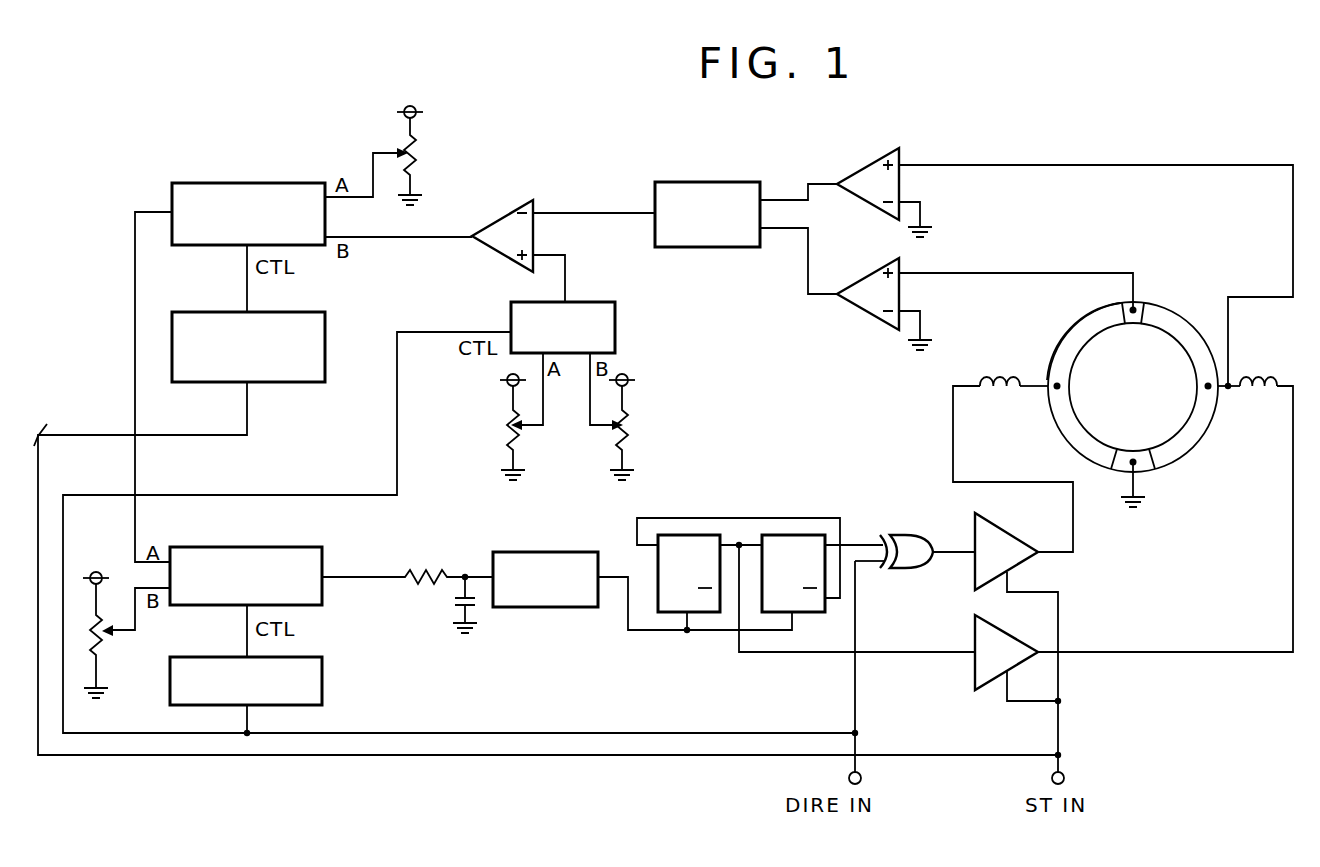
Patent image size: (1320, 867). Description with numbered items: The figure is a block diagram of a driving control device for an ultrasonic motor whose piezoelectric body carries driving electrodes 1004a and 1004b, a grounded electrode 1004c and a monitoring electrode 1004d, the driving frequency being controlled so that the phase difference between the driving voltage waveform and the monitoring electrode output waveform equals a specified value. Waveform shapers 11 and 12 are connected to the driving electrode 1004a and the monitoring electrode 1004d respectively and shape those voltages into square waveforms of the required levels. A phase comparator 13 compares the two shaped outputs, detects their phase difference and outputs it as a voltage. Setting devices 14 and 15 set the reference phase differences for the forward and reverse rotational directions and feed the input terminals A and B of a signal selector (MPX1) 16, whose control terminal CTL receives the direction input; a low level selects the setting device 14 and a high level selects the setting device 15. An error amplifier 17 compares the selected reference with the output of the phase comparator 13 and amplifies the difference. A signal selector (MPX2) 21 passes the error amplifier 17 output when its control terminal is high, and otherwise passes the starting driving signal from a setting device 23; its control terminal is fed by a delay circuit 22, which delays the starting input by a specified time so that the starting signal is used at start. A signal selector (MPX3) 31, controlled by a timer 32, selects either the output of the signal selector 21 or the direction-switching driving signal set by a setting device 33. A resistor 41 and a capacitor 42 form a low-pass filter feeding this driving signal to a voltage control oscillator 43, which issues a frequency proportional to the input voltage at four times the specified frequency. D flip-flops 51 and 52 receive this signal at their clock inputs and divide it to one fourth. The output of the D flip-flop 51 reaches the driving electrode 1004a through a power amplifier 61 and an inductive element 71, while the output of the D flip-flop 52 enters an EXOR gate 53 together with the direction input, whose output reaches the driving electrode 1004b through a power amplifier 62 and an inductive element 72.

The waveform shaper 11 is at (866, 170).
The waveform shaper 12 is at (864, 314).
The phase comparator 13 is at (655, 195).
The setting device 14 is at (500, 424).
The setting device 15 is at (636, 428).
The signal selector (MPX1) 16 is at (615, 332).
The error amplifier 17 is at (490, 224).
The signal selector (MPX2) 21 is at (248, 183).
The delay circuit 22 is at (200, 312).
The setting device 23 is at (400, 138).
The signal selector (MPX3) 31 is at (242, 547).
The timer 32 is at (322, 688).
The setting device 33 is at (104, 644).
The resistor 41 is at (426, 570).
The capacitor 42 is at (450, 606).
The voltage control oscillator (VCO) 43 is at (520, 552).
The D flip-flop 51 is at (658, 562).
The D flip-flop 52 is at (826, 612).
The EXOR gate 53 is at (914, 570).
The power amplifier 61 is at (998, 632).
The power amplifier 62 is at (998, 532).
The inductive element 71 is at (1258, 378).
The inductive element 72 is at (1004, 400).
The driving electrode group 1004a is at (1172, 452).
The driving electrode group 1004b is at (1095, 330).
The electrode 1004c is at (1148, 472).
The monitoring electrode 1004d is at (1138, 305).